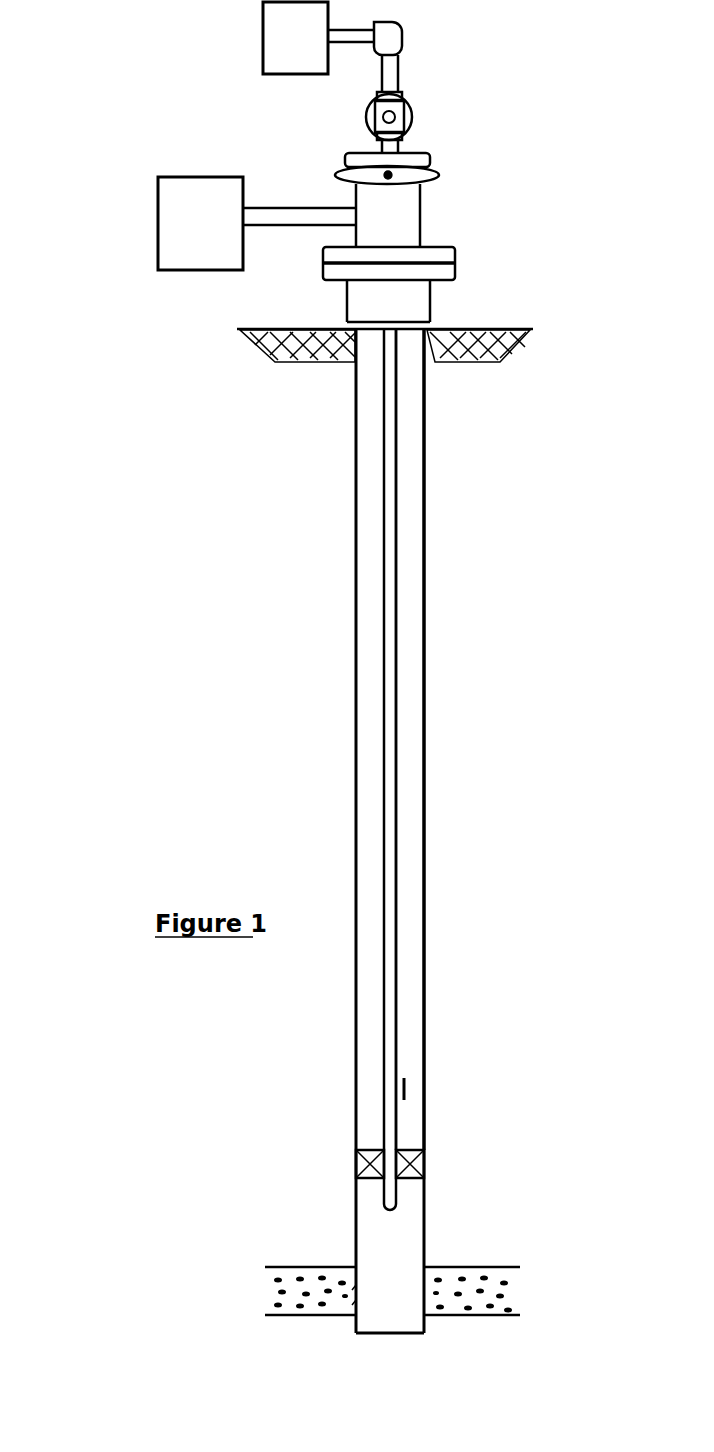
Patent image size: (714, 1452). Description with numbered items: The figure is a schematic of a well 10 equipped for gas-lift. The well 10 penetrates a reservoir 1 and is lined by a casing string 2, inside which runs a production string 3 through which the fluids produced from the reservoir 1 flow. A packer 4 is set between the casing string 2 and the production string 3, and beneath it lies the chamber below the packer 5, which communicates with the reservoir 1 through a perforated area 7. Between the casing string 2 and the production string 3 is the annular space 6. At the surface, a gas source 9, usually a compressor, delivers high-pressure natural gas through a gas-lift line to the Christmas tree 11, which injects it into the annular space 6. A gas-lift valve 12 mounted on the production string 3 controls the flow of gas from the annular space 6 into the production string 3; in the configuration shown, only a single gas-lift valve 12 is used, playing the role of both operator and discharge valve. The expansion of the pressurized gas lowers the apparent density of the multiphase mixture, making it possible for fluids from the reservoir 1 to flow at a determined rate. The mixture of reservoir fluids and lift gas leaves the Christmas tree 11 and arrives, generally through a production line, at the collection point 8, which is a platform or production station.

The reservoir 1 is at (262, 1288).
The casing string 2 is at (355, 603).
The production string 3 is at (398, 740).
The packer 4 is at (356, 1170).
The chamber below the packer 5 is at (387, 1257).
The annular space 6 is at (406, 431).
The perforated area 7 is at (353, 1290).
The collection point 8 is at (262, 38).
The gas source 9 is at (157, 232).
The well 10 is at (495, 590).
The Christmas tree 11 is at (495, 226).
The gas-lift valve 12 is at (405, 1098).